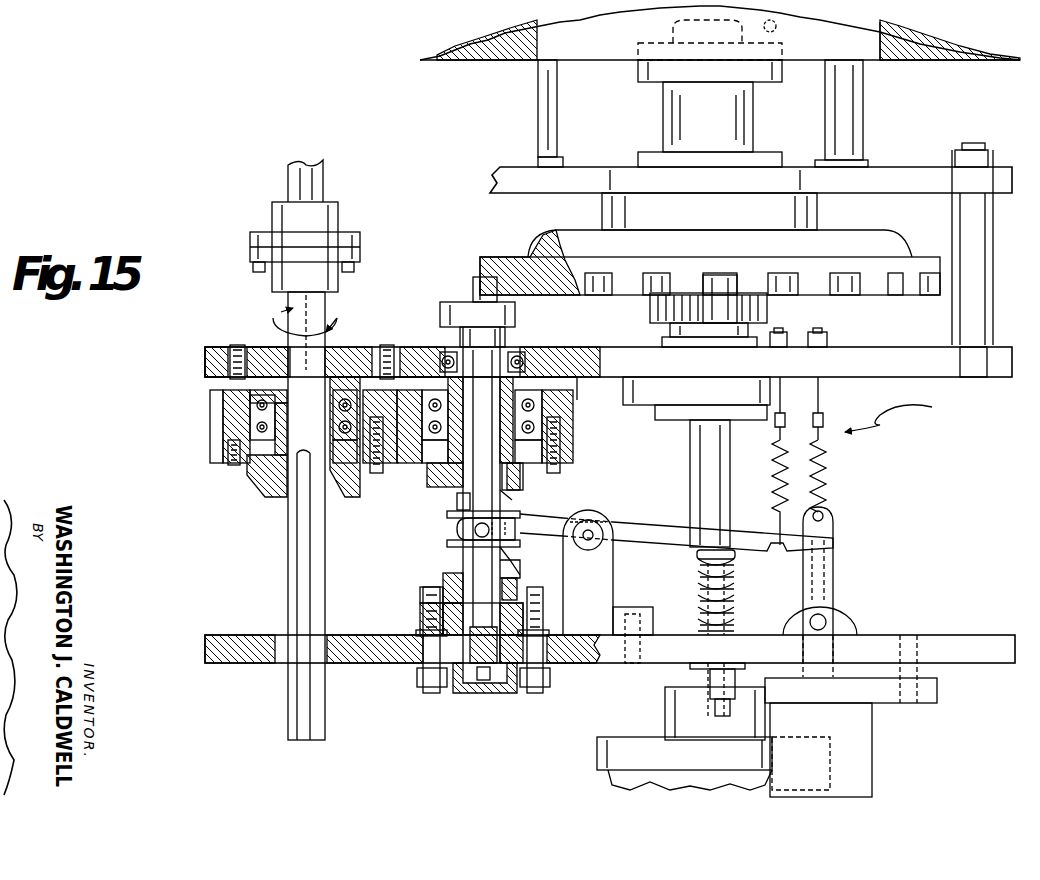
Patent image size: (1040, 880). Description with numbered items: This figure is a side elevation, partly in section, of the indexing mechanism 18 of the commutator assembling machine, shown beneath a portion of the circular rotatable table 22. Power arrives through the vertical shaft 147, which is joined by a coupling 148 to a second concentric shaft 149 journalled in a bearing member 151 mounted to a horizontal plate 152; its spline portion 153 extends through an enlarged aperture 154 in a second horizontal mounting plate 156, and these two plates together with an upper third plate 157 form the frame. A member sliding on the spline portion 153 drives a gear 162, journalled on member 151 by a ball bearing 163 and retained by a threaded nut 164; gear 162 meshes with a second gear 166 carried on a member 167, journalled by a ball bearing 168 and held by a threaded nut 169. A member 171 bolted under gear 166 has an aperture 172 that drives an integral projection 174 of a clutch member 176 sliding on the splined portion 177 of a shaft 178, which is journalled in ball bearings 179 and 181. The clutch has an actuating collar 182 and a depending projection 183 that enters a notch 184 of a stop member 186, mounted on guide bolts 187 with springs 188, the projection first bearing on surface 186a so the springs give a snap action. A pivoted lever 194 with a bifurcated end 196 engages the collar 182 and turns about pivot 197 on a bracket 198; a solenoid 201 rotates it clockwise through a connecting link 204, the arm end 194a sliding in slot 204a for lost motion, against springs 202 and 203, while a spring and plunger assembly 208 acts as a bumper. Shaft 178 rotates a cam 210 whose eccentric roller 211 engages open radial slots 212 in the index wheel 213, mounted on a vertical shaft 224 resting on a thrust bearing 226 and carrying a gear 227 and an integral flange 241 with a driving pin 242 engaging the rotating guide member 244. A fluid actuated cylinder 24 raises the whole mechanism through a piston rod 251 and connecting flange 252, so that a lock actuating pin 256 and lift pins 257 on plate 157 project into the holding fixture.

The indexing mechanism 18 is at (896, 412).
The rotatable table 22 is at (961, 52).
The fluid actuated cylinder 24 is at (608, 781).
The vertical shaft 147 is at (293, 176).
The coupling 148 is at (272, 222).
The second concentric shaft 149 is at (278, 304).
The bearing member 151 is at (272, 352).
The horizontal plate 152 is at (210, 360).
The spline portion 153 is at (302, 562).
The enlarged aperture 154 is at (284, 658).
The second horizontal mounting plate 156 is at (232, 642).
The upper third plate 157 is at (516, 170).
The gear 162 is at (213, 406).
The ball bearing 163 is at (252, 428).
The threaded nut 164 is at (266, 456).
The second gear 166 is at (545, 394).
The member 167 is at (415, 352).
The ball bearing 168 is at (536, 406).
The threaded nut 169 is at (537, 446).
The member 171 is at (540, 463).
The aperture 172 is at (522, 481).
The integral projection 174 is at (512, 496).
The clutch member 176 is at (462, 506).
The splined portion 177 is at (482, 616).
The shaft 178 is at (477, 471).
The ball bearing 179 is at (444, 359).
The ball bearing 181 is at (447, 663).
The actuating collar 182 is at (458, 532).
The depending projection 183 is at (516, 574).
The notch 184 is at (518, 580).
The stop member 186 is at (437, 592).
The surface 186a is at (452, 578).
The guide bolts 187 is at (424, 650).
The springs 188 is at (430, 631).
The pivoted lever 194 is at (668, 532).
The end of arm 194a is at (833, 532).
The bifurcated end 196 is at (514, 543).
The pivot 197 is at (590, 534).
The bracket 198 is at (606, 628).
The solenoid 201 is at (864, 728).
The spring 202 is at (754, 461).
The spring 203 is at (824, 462).
The connecting link 204 is at (803, 574).
The slot 204a is at (833, 568).
The adjustable spring and plunger assembly 208 is at (697, 577).
The cam 210 is at (458, 306).
The roller 211 is at (474, 284).
The open radial slots 212 is at (505, 268).
The horizontal index wheel 213 is at (526, 246).
The vertical shaft 224 is at (683, 108).
The thrust bearing 226 is at (746, 332).
The gear 227 is at (662, 308).
The integral flange 241 is at (653, 68).
The projecting driving pin 242 is at (790, 21).
The rotating guide member 244 is at (864, 54).
The piston rod 251 is at (702, 437).
The connecting flange 252 is at (666, 377).
The lock actuating pin 256 is at (540, 110).
The lift pins 257 is at (852, 120).